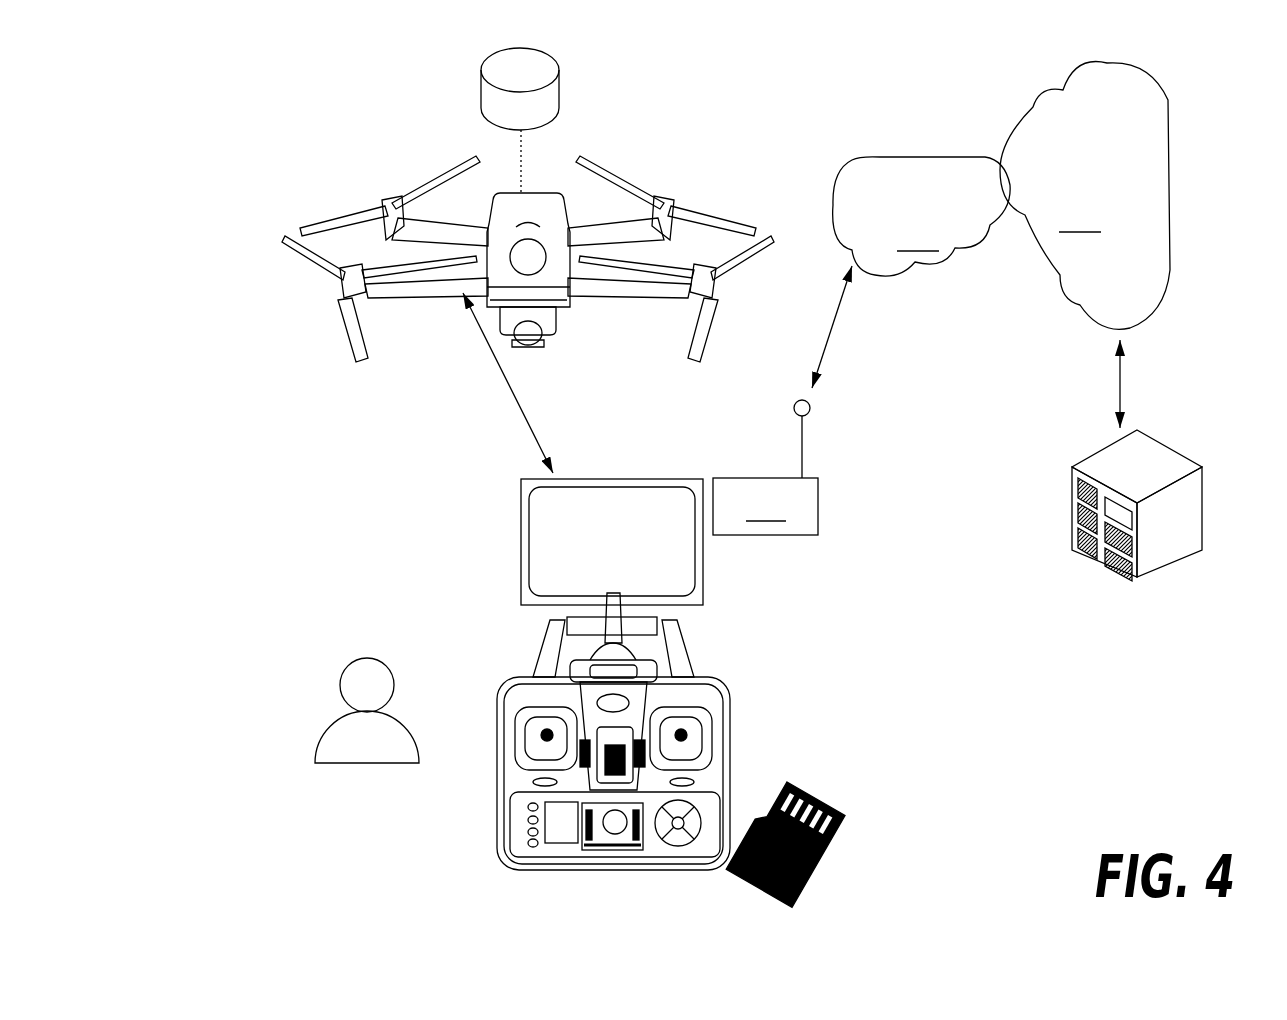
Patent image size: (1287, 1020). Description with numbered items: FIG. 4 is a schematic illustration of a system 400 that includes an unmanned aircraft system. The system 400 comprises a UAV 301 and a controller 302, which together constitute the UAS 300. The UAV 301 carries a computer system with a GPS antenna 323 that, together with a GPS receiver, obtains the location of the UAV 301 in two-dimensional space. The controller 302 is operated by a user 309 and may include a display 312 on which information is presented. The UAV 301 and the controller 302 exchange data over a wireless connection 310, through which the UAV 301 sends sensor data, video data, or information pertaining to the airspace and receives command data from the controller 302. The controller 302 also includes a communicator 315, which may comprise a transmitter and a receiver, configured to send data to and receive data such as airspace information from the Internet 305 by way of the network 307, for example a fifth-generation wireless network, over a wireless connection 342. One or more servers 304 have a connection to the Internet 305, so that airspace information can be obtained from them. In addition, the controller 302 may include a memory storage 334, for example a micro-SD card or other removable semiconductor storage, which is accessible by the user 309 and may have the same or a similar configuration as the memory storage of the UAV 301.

The system 400 is at (305, 128).
The GPS antenna 323 is at (553, 68).
The UAS 300 is at (461, 535).
The UAV 301 is at (335, 322).
The controller 302 is at (508, 845).
The wireless connection 310 is at (518, 407).
The display 312 is at (685, 582).
The communicator 315 is at (765, 467).
The wireless connection 342 is at (828, 333).
The network 307 is at (922, 216).
The Internet 305 is at (1085, 196).
The server 304 is at (1162, 563).
The user 309 is at (362, 768).
The memory storage 334 is at (830, 802).